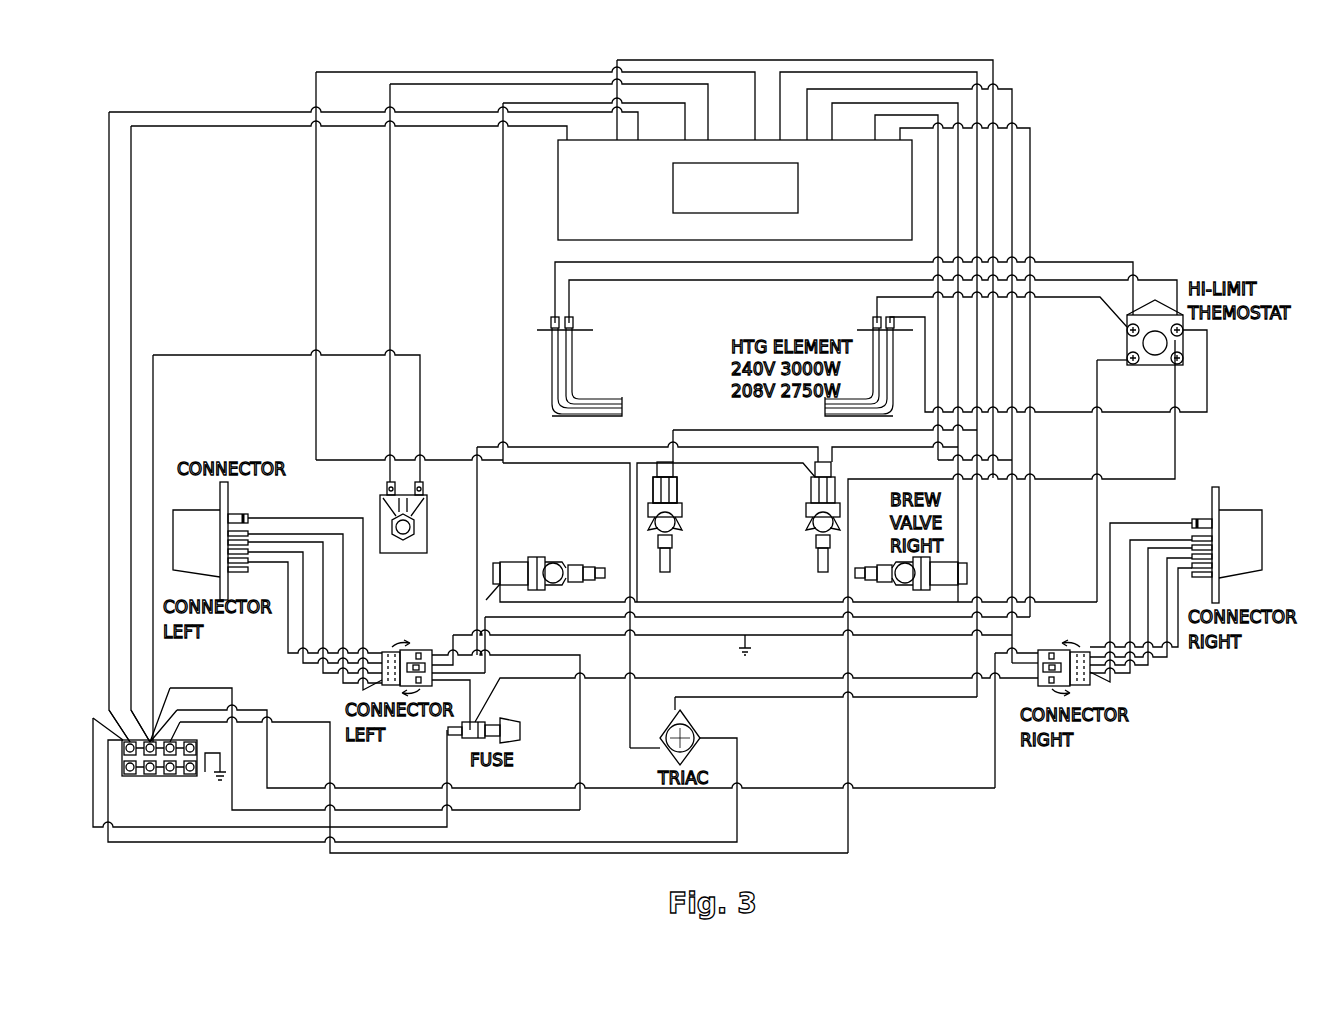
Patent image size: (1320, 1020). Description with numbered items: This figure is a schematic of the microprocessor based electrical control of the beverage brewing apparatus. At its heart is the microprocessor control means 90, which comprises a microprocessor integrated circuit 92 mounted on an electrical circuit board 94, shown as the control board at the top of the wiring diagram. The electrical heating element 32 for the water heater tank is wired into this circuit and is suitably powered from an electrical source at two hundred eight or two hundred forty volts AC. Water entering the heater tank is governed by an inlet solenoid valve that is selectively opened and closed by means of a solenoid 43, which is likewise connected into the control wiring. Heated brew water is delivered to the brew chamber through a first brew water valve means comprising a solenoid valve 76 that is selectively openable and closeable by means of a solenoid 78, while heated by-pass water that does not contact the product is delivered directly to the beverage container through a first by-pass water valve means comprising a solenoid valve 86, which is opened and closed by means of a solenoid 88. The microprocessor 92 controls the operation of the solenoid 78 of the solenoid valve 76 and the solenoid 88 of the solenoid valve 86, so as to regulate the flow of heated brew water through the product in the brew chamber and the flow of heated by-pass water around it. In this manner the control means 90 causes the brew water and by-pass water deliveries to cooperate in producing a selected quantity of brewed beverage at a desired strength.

The electrical heating element 32 is at (553, 392).
The solenoid 43 is at (425, 543).
The solenoid valve 76 is at (545, 562).
The solenoid 78 is at (500, 556).
The solenoid valve 86 is at (677, 512).
The solenoid 88 is at (668, 489).
The microprocessor control means 90 is at (548, 247).
The microprocessor integrated circuit 92 is at (724, 196).
The electrical circuit board 94 is at (576, 214).